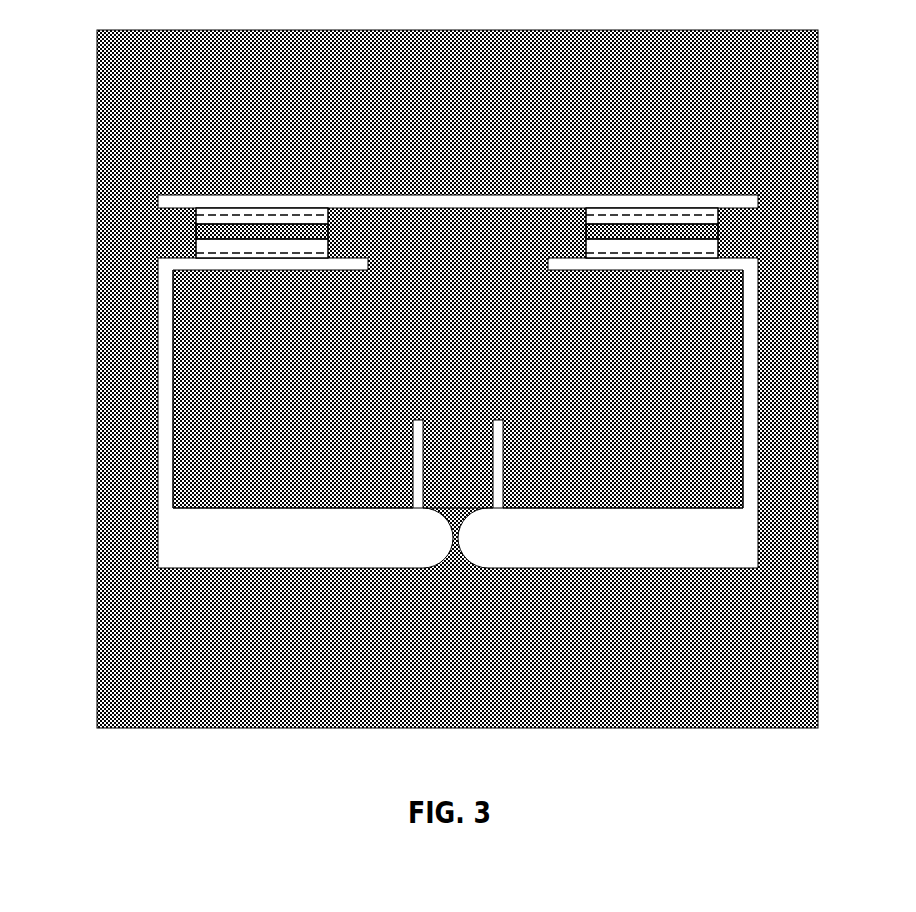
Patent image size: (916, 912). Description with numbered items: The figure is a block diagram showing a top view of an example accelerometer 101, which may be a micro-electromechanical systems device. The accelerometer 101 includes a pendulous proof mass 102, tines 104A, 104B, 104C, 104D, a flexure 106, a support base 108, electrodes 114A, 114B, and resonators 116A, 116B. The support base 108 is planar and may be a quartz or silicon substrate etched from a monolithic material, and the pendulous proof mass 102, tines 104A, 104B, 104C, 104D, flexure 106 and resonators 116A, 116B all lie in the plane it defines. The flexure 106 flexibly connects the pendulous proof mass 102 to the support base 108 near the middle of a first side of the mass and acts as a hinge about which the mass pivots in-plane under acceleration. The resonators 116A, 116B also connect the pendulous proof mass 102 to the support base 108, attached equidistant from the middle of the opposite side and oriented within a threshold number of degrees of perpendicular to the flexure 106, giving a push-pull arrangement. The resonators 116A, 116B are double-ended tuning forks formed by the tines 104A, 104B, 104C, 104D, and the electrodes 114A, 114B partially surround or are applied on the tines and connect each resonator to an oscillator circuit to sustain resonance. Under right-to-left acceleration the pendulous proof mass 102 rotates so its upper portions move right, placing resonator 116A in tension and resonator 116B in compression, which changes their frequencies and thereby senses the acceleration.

The accelerometer 101 is at (808, 107).
The pendulous proof mass 102 is at (416, 356).
The tine 104A is at (237, 224).
The tine 104B is at (237, 224).
The tine 104C is at (628, 224).
The tine 104D is at (628, 224).
The flexure 106 is at (448, 533).
The support base 108 is at (450, 115).
The electrode 114A is at (312, 246).
The electrode 114B is at (598, 246).
The resonator 116A is at (145, 222).
The resonator 116B is at (751, 222).